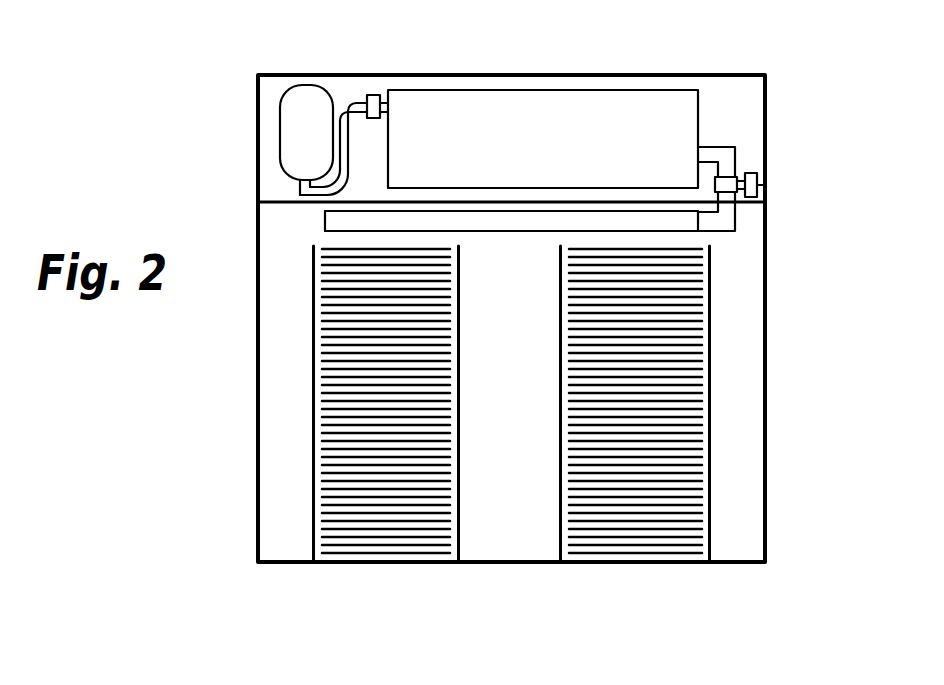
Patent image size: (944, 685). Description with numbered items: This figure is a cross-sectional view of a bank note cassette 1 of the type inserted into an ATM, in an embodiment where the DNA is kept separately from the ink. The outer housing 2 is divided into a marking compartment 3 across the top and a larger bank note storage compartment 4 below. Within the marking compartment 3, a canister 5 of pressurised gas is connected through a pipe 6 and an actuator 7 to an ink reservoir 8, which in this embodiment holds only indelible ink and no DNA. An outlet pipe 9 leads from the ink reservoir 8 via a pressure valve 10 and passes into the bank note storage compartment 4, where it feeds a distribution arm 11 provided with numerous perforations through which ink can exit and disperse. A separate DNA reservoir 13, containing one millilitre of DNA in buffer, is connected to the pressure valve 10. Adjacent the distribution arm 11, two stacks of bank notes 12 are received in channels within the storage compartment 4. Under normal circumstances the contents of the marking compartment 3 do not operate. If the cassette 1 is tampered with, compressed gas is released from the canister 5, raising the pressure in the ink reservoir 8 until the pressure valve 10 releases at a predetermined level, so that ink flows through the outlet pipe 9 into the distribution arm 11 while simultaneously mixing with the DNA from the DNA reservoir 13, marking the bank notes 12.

The bank note cassette 1 is at (812, 329).
The outer housing 2 is at (257, 362).
The marking compartment 3 is at (270, 104).
The bank note storage compartment 4 is at (270, 233).
The canister 5 is at (312, 84).
The pipe 6 is at (360, 97).
The actuator 7 is at (380, 94).
The ink reservoir 8 is at (527, 90).
The outlet pipe 9 is at (737, 160).
The pressure valve 10 is at (715, 184).
The distribution arm 11 is at (525, 232).
The bank notes 12 is at (388, 557).
The DNA reservoir 13 is at (757, 186).